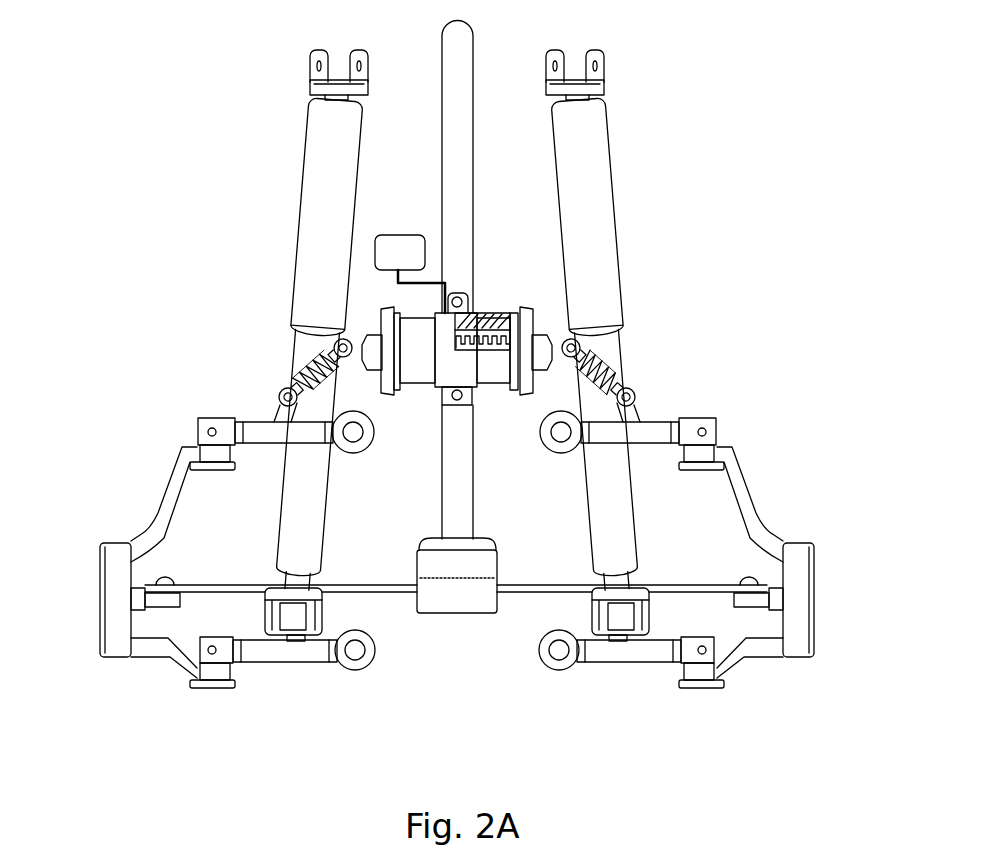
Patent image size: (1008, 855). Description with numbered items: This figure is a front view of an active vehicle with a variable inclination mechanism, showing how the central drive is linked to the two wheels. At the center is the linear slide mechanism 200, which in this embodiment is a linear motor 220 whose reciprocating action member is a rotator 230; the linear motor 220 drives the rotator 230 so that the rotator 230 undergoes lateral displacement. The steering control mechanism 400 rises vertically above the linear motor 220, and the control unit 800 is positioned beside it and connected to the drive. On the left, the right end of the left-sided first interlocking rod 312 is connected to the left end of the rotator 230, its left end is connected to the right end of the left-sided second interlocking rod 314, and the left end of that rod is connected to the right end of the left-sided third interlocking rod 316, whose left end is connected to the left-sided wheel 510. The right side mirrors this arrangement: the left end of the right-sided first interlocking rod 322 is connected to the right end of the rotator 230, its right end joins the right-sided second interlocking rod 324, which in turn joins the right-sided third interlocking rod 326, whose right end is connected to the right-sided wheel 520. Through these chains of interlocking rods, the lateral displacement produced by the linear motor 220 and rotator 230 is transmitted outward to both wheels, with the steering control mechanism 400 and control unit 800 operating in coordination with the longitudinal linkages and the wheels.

The linear slide mechanism 200 is at (508, 222).
The linear motor 220 is at (425, 370).
The rotator 230 is at (488, 313).
The left-sided first interlocking rod 312 is at (292, 368).
The left-sided second interlocking rod 314 is at (257, 430).
The left-sided third interlocking rod 316 is at (167, 497).
The right-sided first interlocking rod 322 is at (622, 368).
The right-sided second interlocking rod 324 is at (657, 430).
The right-sided third interlocking rod 326 is at (747, 497).
The steering control mechanism 400 is at (465, 90).
The left-sided wheel 510 is at (100, 600).
The right-sided wheel 520 is at (814, 600).
The control unit 800 is at (398, 233).